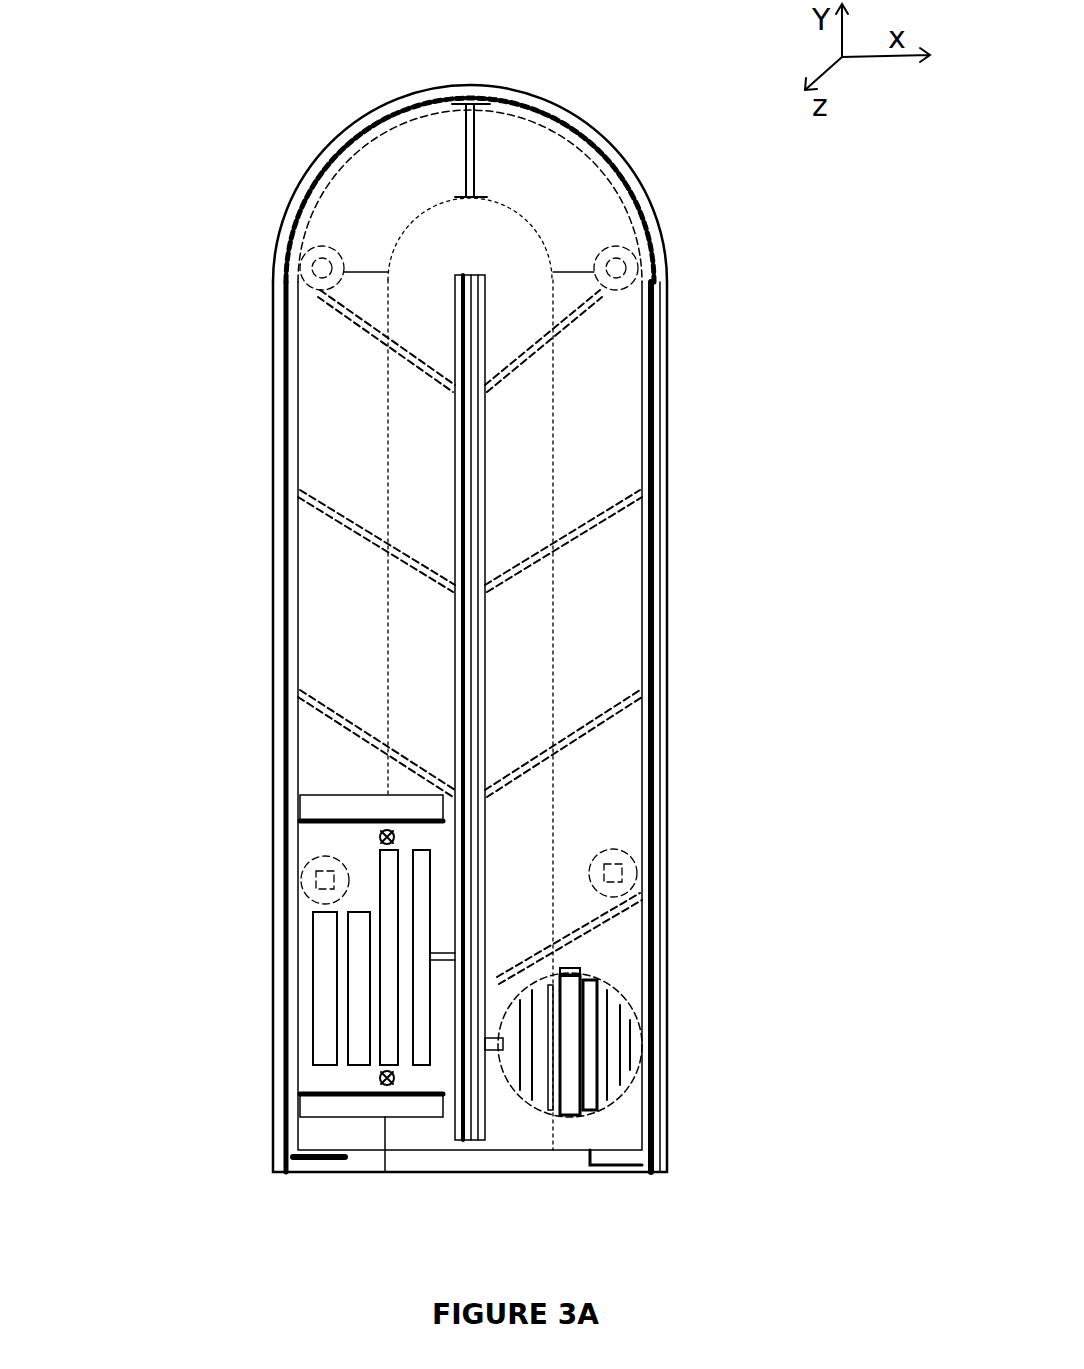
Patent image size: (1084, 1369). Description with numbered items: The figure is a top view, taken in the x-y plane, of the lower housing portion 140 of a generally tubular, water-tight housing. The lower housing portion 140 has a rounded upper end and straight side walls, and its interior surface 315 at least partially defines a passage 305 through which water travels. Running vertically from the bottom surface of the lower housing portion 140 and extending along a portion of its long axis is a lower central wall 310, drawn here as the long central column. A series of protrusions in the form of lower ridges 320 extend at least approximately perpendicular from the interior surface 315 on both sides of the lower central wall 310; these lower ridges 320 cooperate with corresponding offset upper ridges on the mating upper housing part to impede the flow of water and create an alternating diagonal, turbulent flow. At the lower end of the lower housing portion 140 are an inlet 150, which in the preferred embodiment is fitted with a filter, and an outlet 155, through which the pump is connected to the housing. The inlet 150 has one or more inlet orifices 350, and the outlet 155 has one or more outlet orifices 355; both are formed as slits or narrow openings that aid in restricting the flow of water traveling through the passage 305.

The lower housing portion 140 is at (180, 149).
The passage 305 is at (545, 162).
The interior surface 315 is at (360, 150).
The lower central wall 310 is at (470, 465).
The lower ridges 320 is at (340, 520).
The inlet 150 is at (335, 992).
The inlet orifices 350 is at (360, 1037).
The outlet 155 is at (595, 1045).
The outlet orifices 355 is at (580, 1093).